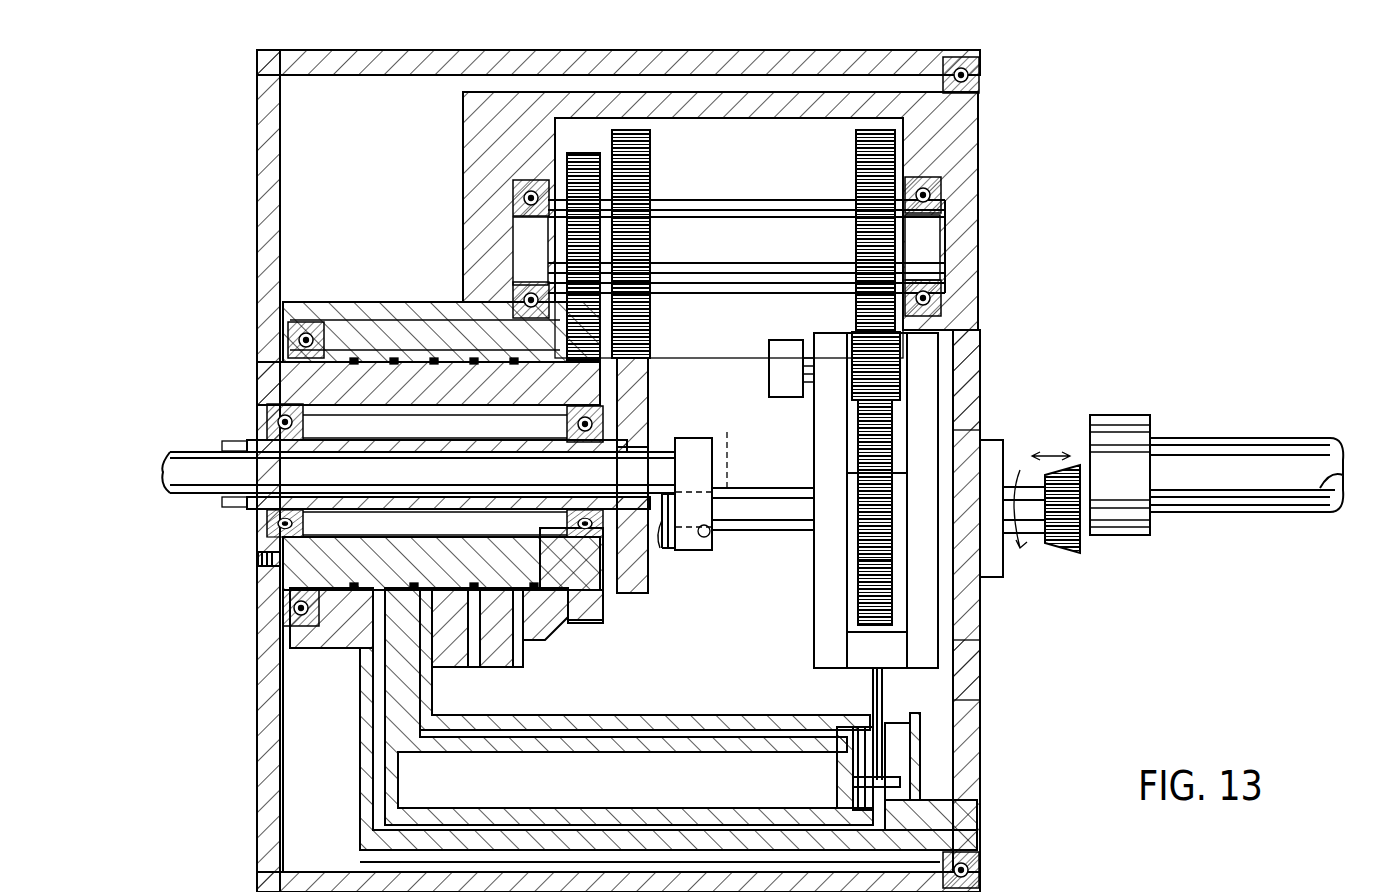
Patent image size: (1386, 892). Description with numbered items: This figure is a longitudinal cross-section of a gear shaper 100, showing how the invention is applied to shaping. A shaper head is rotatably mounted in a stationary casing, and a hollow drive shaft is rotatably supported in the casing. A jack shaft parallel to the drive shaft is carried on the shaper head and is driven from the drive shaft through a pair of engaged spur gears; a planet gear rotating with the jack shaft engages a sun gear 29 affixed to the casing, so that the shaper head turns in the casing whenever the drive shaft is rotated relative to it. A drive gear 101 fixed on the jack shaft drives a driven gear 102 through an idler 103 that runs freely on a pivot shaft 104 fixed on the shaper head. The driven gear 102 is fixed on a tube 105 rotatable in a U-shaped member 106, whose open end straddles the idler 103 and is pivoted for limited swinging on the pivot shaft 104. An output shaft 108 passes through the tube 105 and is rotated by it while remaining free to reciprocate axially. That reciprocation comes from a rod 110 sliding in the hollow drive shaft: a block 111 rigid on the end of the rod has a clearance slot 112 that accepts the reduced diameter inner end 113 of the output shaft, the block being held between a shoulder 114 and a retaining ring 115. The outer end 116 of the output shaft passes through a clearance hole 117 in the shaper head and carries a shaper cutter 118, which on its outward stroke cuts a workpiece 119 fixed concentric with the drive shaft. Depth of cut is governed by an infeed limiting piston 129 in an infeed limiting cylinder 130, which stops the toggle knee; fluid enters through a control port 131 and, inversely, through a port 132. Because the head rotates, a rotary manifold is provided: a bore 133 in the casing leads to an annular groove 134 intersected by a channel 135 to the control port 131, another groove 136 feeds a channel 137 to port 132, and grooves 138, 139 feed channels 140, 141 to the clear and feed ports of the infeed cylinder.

The gear shaper 100 is at (203, 150).
The sun gear 29 is at (590, 625).
The drive gear 101 is at (856, 162).
The driven gear 102 is at (855, 600).
The idler 103 is at (858, 340).
The pivot shaft 104 is at (800, 355).
The tube 105 is at (856, 465).
The U-shaped member 106 is at (814, 646).
The output shaft 108 is at (722, 492).
The rod 110 is at (215, 505).
The block 111 is at (692, 426).
The clearance slot 112 is at (711, 467).
The reduced diameter inner end 113 is at (665, 560).
The shoulder 114 is at (712, 535).
The retaining ring 115 is at (668, 548).
The outer end 116 is at (1020, 468).
The clearance hole 117 is at (993, 590).
The shaper cutter 118 is at (1065, 553).
The workpiece 119 is at (1122, 538).
The infeed limiting piston 129 is at (872, 694).
The infeed limiting cylinder 130 is at (897, 725).
The control port 131 is at (858, 850).
The port 132 is at (845, 750).
The bore 133 is at (385, 512).
The annular groove 134 is at (372, 345).
The channel 135 is at (692, 808).
The annular groove 136 is at (405, 330).
The channel 137 is at (553, 733).
The annular groove 138 is at (470, 350).
The annular groove 139 is at (490, 340).
The channel 140 is at (474, 668).
The channel 141 is at (518, 668).